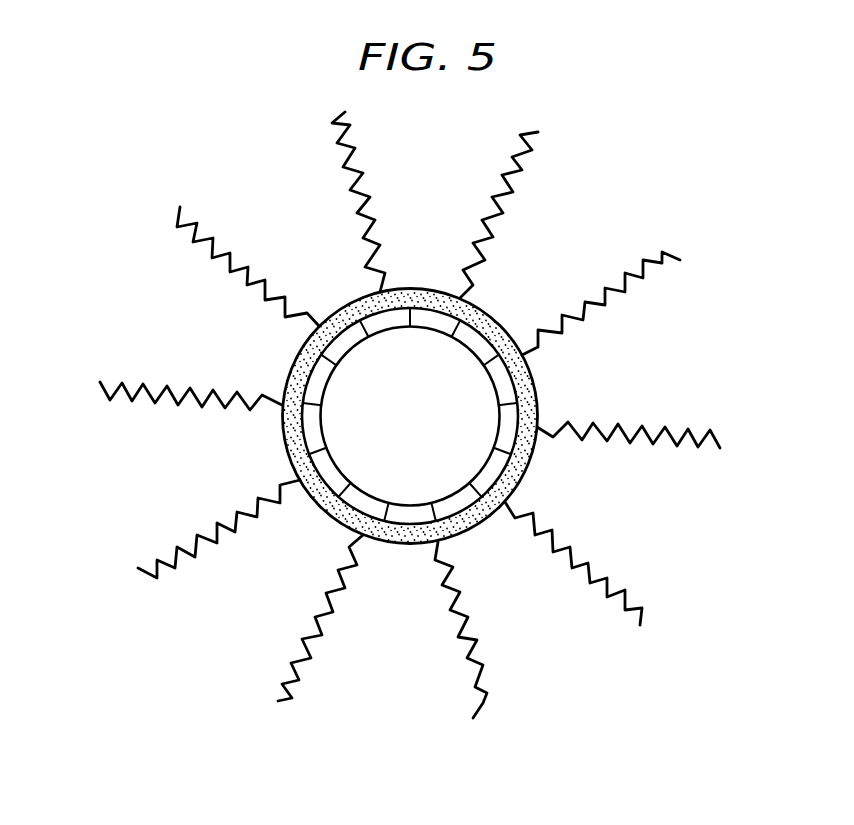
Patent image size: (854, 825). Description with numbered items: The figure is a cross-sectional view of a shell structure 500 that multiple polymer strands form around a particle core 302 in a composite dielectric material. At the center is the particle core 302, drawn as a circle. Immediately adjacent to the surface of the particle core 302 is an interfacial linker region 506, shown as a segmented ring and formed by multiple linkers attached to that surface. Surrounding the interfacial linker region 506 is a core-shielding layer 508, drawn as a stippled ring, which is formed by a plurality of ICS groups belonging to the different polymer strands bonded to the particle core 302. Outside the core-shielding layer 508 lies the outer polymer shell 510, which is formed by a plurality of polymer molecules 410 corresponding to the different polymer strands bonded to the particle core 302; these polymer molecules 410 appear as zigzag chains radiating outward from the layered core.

The shell structure 500 is at (595, 194).
The particle core 302 is at (427, 428).
The interfacial linker region 506 is at (498, 461).
The core-shielding layer 508 is at (284, 446).
The outer polymer shell 510 is at (195, 338).
The polymer molecules 410 is at (142, 570).